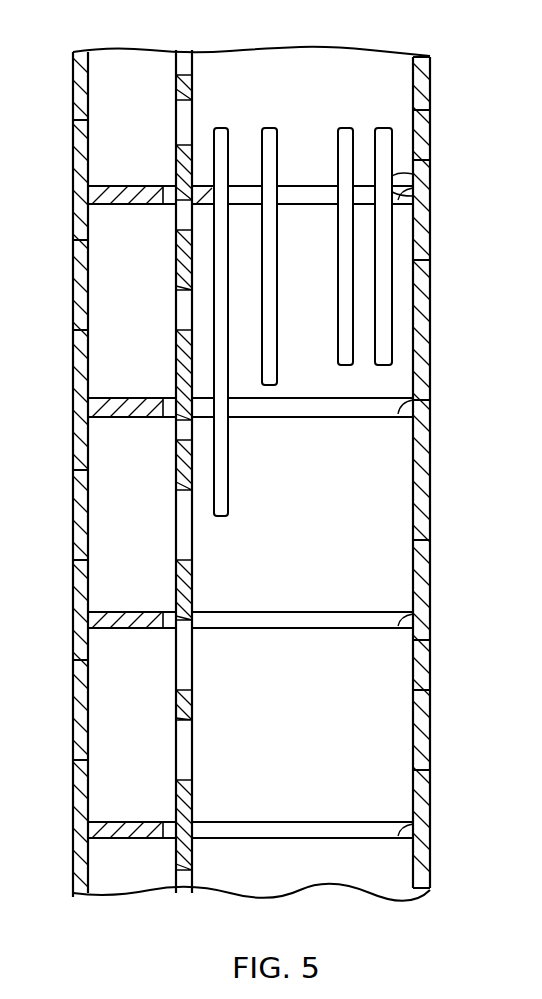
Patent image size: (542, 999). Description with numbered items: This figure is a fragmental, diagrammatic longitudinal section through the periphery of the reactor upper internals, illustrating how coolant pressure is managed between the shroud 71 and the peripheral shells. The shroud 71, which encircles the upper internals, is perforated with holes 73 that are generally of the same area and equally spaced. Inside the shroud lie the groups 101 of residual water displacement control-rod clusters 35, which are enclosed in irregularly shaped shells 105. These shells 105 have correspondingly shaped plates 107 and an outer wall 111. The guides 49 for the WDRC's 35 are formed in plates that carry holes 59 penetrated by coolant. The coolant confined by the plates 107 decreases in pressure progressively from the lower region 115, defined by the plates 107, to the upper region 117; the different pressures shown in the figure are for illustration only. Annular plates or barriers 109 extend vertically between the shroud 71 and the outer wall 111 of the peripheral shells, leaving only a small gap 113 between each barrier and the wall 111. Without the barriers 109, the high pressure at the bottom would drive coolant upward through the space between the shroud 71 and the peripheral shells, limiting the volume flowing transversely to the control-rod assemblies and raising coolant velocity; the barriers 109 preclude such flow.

The groups of residual WDRC's 101 is at (393, 236).
The upper region 117 is at (388, 75).
The lower region 115 is at (384, 865).
The shroud 71 is at (78, 295).
The holes 73 is at (78, 259).
The shells 105 is at (427, 438).
The outer walls 111 is at (182, 598).
The annular plates or barriers 109 is at (131, 186).
The gap 113 is at (166, 204).
The plates 107 is at (316, 205).
The holes 59 is at (244, 192).
The guides 49 is at (416, 176).
The water displacement control-rod clusters 35 is at (230, 128).